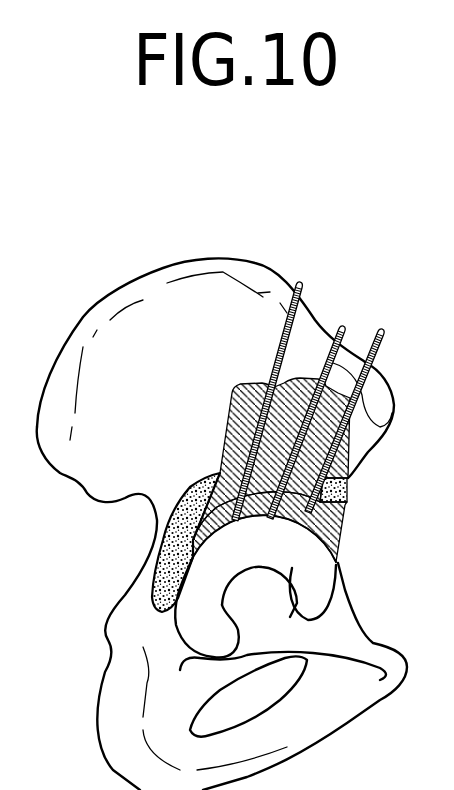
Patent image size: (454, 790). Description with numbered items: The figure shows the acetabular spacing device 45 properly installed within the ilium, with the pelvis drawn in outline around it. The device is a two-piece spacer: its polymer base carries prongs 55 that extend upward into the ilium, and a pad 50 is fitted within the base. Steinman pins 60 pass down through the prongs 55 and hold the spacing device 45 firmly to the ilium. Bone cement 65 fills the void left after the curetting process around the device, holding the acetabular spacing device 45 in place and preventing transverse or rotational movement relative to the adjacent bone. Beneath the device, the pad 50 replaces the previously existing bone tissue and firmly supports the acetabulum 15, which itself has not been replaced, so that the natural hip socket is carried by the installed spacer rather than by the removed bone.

The acetabulum 15 is at (310, 600).
The acetabular spacing device 45 is at (343, 517).
The pad 50 is at (258, 527).
The prong 55 is at (245, 392).
The Steinman pins 60 is at (303, 283).
The bone cement 65 is at (348, 483).